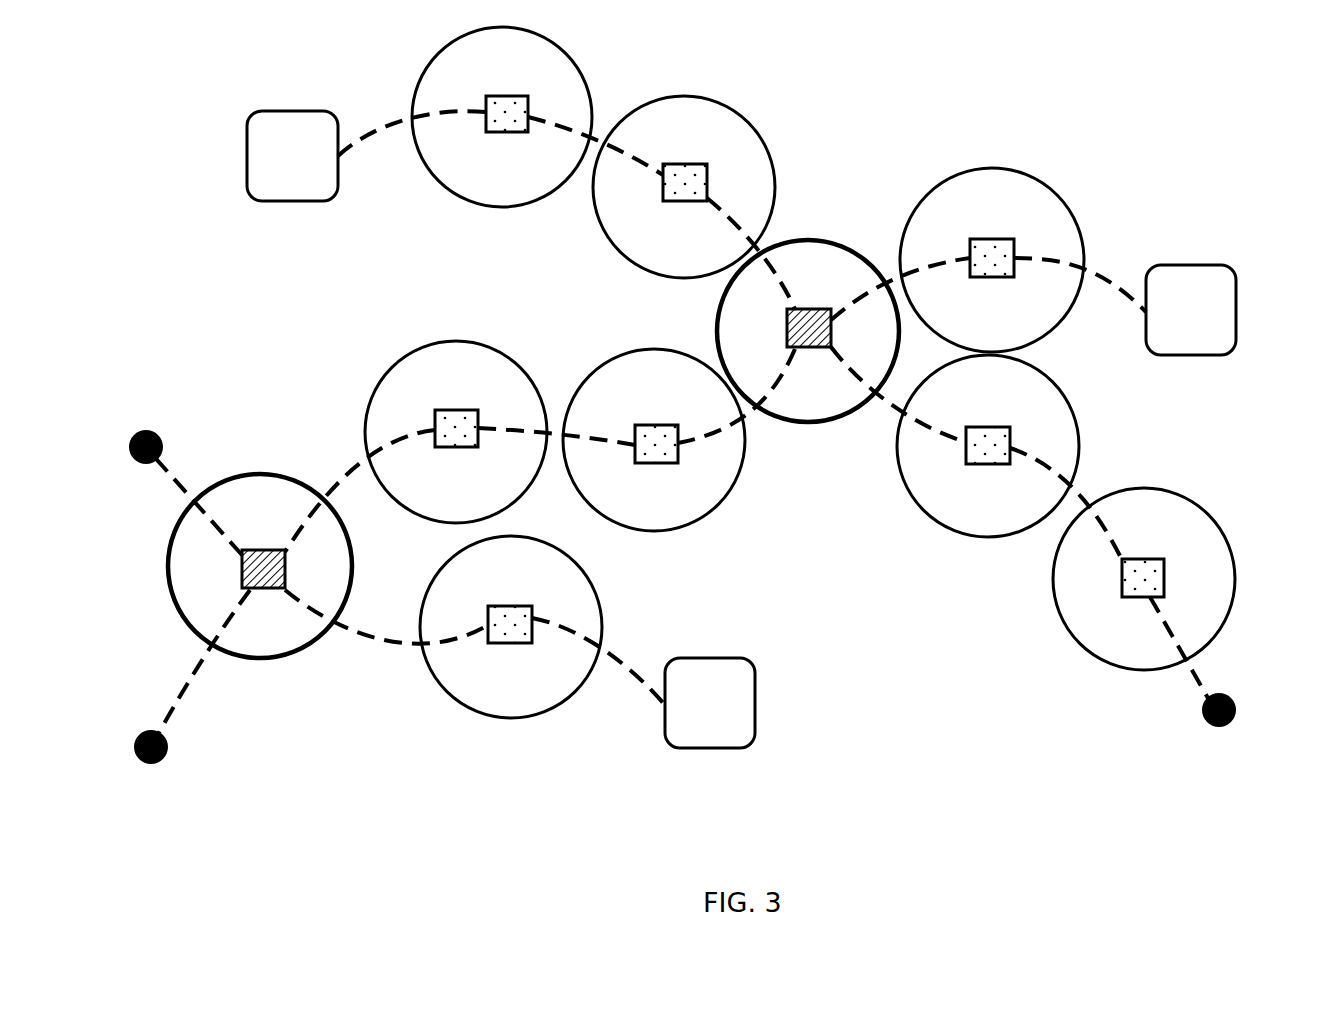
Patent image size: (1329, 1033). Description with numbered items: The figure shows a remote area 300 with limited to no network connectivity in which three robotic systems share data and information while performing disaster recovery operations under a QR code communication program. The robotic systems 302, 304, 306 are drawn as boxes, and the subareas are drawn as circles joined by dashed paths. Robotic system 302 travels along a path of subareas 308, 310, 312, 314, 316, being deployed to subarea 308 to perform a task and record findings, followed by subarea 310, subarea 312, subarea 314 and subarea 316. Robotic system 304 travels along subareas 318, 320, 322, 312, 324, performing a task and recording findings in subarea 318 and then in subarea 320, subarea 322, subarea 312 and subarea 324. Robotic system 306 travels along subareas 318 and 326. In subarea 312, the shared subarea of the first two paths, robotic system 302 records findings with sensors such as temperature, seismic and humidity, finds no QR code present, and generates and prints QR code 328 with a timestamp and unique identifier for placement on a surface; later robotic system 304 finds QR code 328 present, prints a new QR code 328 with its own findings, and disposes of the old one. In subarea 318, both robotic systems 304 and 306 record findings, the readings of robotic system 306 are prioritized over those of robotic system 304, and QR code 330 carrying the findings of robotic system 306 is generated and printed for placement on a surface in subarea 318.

The remote area 300 is at (1182, 140).
The robotic system 302 is at (274, 166).
The robotic system 304 is at (1173, 320).
The robotic system 306 is at (692, 713).
The subarea 308 is at (1207, 508).
The subarea 310 is at (1078, 438).
The subarea 312 is at (820, 418).
The subarea 314 is at (743, 113).
The subarea 316 is at (570, 62).
The subarea 318 is at (297, 653).
The subarea 320 is at (497, 352).
The subarea 322 is at (722, 497).
The subarea 324 is at (1060, 192).
The subarea 326 is at (600, 612).
The QR code 328 is at (813, 308).
The QR code 330 is at (262, 550).